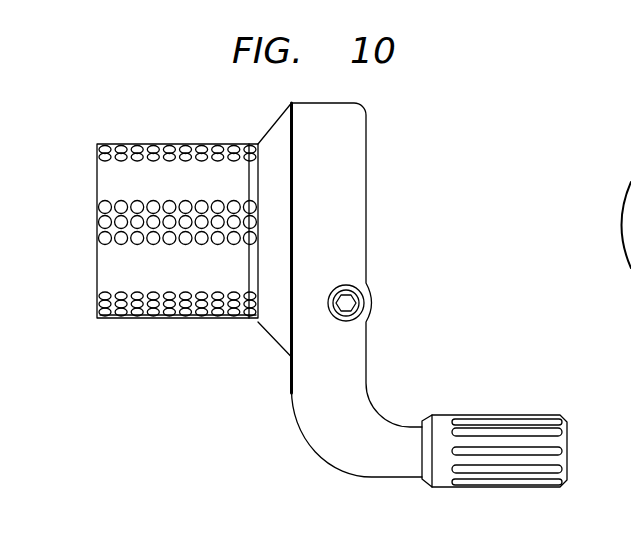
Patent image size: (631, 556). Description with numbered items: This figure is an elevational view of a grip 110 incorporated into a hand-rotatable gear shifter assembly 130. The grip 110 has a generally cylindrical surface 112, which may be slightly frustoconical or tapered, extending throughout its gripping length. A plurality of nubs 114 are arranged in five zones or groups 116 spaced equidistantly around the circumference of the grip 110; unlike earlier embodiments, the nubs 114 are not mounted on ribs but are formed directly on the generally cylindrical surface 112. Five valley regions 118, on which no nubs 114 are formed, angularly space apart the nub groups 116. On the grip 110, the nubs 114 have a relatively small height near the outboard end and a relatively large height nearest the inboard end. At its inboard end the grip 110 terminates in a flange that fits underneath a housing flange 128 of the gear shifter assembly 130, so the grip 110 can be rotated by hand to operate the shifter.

The grip 110 is at (151, 105).
The generally cylindrical surface 112 is at (149, 190).
The nubs 114 is at (217, 143).
The nub groups 116 is at (98, 152).
The valley regions 118 is at (223, 190).
The housing flange 128 is at (275, 132).
The gear shifter assembly 130 is at (356, 158).